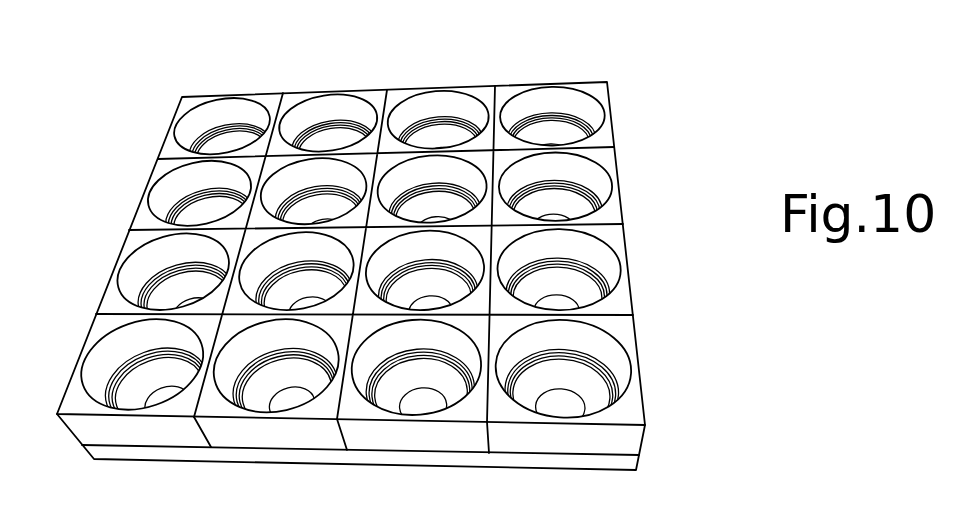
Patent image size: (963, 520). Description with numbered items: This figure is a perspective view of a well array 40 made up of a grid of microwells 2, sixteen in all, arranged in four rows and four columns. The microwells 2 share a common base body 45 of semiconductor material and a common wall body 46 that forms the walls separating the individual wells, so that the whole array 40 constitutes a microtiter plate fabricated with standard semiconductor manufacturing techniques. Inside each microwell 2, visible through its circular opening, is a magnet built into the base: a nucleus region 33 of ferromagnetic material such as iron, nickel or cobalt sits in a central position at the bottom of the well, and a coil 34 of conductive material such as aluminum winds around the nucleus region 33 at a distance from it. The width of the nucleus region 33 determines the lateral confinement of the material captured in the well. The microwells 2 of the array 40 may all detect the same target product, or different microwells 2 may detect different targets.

The microwell 2 is at (292, 96).
The nucleus region 33 is at (558, 217).
The coil 34 is at (222, 136).
The well array 40 is at (673, 212).
The common base body 45 is at (615, 467).
The common wall body 46 is at (586, 88).